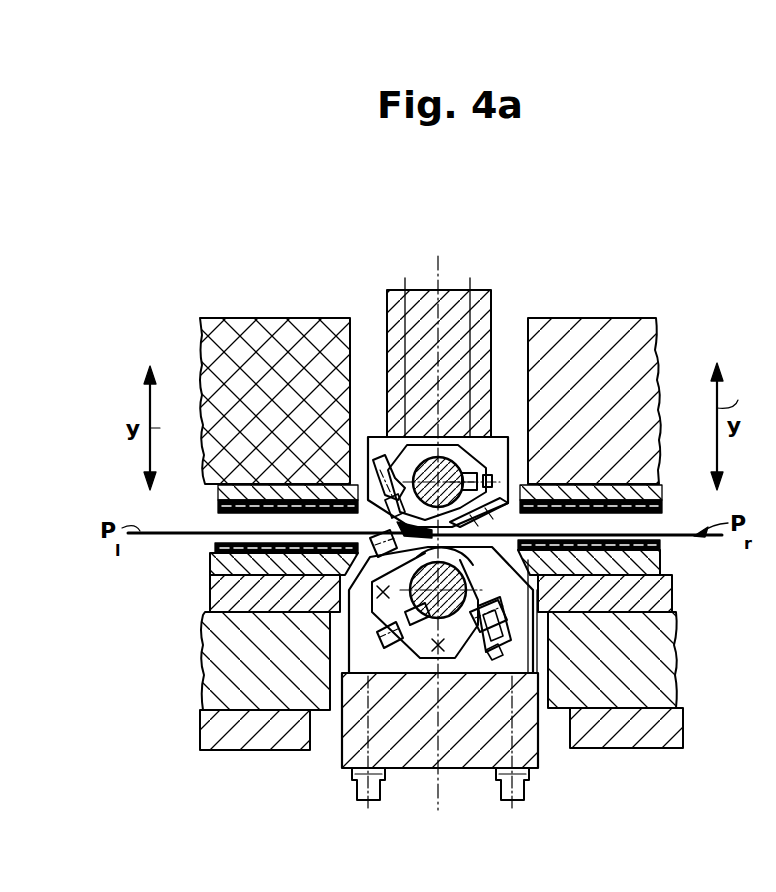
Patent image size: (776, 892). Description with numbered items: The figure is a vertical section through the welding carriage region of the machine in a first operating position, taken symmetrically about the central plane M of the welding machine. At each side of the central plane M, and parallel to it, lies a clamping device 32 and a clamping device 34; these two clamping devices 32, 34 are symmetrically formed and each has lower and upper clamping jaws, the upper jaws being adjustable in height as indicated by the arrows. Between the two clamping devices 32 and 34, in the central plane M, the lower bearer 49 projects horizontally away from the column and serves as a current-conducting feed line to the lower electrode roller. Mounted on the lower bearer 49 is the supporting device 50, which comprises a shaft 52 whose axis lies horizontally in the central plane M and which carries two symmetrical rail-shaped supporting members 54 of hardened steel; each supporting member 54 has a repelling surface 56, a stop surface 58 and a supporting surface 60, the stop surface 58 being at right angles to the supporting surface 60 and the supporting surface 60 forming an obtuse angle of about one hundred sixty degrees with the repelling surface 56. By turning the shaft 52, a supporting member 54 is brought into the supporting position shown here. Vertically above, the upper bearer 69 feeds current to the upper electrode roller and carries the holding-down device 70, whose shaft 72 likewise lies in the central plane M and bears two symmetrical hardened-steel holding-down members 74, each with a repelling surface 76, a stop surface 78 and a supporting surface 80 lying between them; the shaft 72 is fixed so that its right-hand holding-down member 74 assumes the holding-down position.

The clamping device 32 is at (216, 306).
The clamping device 34 is at (638, 306).
The upper bearer 69 is at (478, 305).
The central plane M is at (437, 520).
The holding-down device 70 is at (497, 410).
The shaft 72 is at (404, 452).
The holding-down member 74 is at (388, 470).
The repelling surface 76 is at (383, 510).
The stop surface 78 is at (396, 529).
The supporting surface 80 is at (384, 510).
The supporting device 50 is at (511, 655).
The shaft 52 is at (425, 615).
The supporting member 54 is at (378, 560).
The repelling surface 56 is at (493, 655).
The stop surface 58 is at (498, 601).
The supporting surface 60 is at (500, 625).
The lower bearer 49 is at (532, 742).